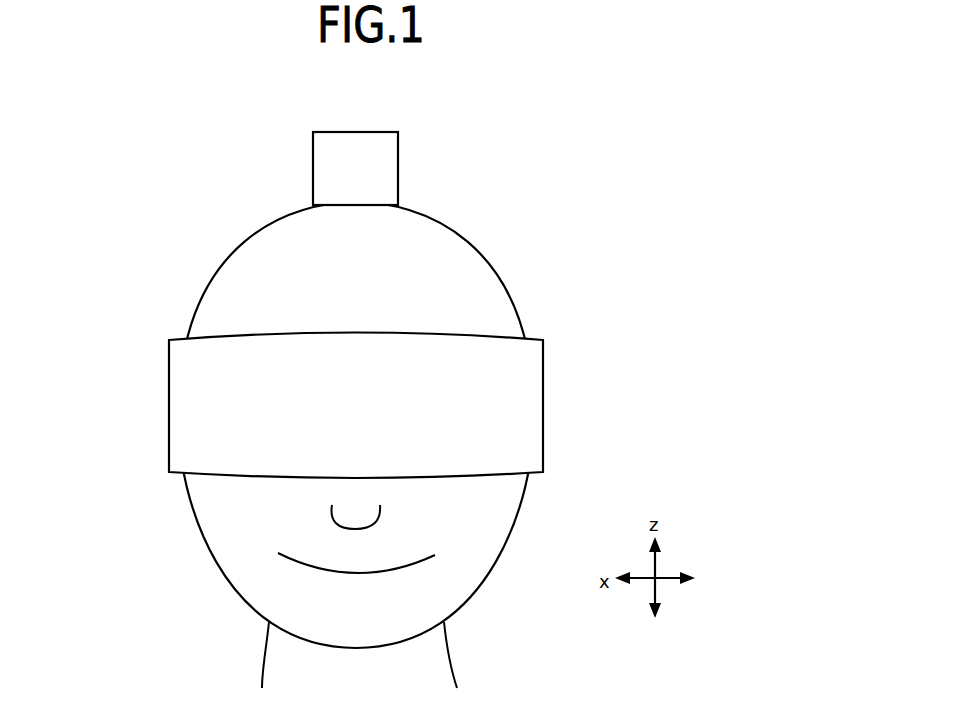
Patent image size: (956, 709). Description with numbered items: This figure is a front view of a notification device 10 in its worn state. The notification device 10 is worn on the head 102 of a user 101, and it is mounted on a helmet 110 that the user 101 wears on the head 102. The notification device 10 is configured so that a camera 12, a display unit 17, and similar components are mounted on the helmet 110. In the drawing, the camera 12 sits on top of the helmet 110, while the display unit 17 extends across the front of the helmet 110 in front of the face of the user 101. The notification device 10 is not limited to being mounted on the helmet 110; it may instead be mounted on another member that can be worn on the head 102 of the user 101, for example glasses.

The notification device 10 is at (329, 269).
The camera 12 is at (345, 147).
The display unit 17 is at (532, 412).
The user 101 is at (200, 607).
The head 102 is at (245, 260).
The helmet 110 is at (302, 242).